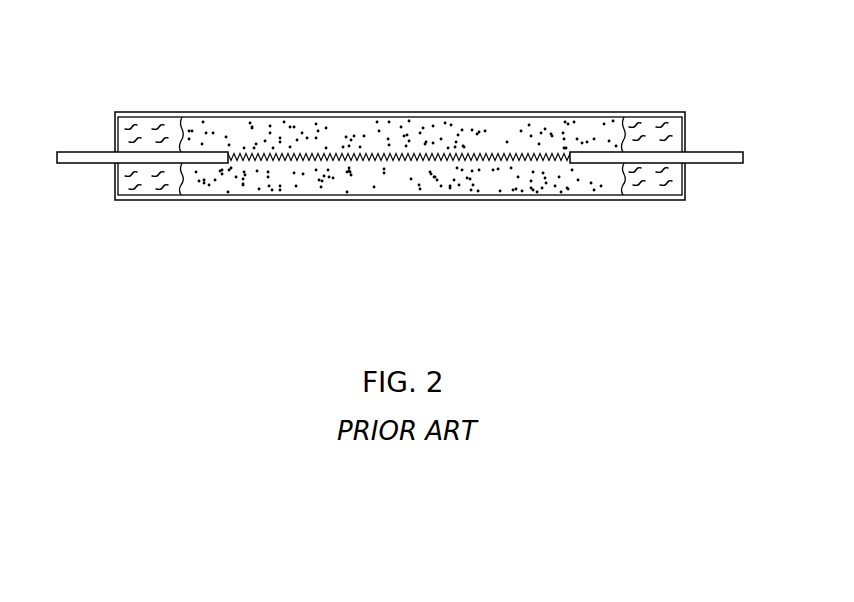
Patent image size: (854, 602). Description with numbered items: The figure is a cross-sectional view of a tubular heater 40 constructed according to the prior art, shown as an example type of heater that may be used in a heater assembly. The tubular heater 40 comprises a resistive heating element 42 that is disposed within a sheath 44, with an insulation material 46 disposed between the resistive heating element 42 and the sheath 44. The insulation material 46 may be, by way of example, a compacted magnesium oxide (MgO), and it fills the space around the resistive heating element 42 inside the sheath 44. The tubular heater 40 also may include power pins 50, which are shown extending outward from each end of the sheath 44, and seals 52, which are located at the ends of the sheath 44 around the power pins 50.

The tubular heater 40 is at (405, 100).
The resistive heating element 42 is at (253, 159).
The sheath 44 is at (472, 200).
The insulation material 46 is at (373, 188).
The power pins 50 is at (707, 164).
The seals 52 is at (144, 187).